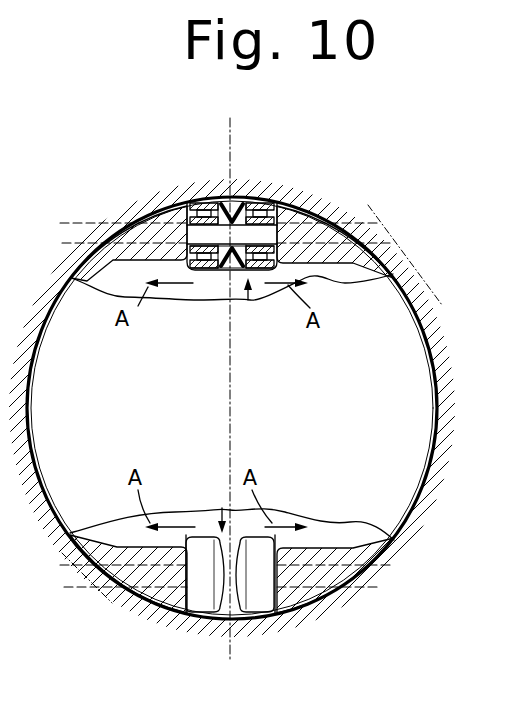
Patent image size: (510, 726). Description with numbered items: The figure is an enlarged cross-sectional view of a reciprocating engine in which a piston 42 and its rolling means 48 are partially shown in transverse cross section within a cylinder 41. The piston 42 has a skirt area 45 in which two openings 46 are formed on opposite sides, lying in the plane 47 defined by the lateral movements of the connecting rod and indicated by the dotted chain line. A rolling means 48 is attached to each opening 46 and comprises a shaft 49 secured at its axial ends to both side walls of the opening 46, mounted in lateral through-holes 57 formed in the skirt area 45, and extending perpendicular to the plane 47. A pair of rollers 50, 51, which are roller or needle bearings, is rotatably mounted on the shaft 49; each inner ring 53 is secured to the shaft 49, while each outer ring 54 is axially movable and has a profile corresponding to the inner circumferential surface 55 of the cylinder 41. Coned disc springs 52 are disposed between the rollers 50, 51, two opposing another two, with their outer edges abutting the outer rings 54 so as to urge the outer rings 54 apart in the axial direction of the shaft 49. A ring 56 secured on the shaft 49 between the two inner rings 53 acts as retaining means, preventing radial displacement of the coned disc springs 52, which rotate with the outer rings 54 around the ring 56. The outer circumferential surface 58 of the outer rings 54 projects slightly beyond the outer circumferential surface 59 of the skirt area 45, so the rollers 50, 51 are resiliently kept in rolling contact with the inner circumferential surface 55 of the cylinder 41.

The cylinder 41 is at (437, 313).
The piston 42 is at (415, 368).
The skirt area 45 is at (330, 560).
The openings 46 is at (343, 283).
The plane 47 is at (231, 645).
The rolling means 48 is at (248, 296).
The shaft 49 is at (320, 226).
The roller 50 is at (190, 204).
The roller 51 is at (270, 203).
The coned disc springs 52 is at (238, 203).
The inner rings 53 is at (203, 270).
The outer rings 54 is at (214, 203).
The inner circumferential surface 55 is at (350, 255).
The ring 56 is at (207, 270).
The lateral through-holes 57 is at (130, 237).
The outer circumferential surface 58 is at (225, 612).
The outer circumferential surface 59 is at (135, 598).